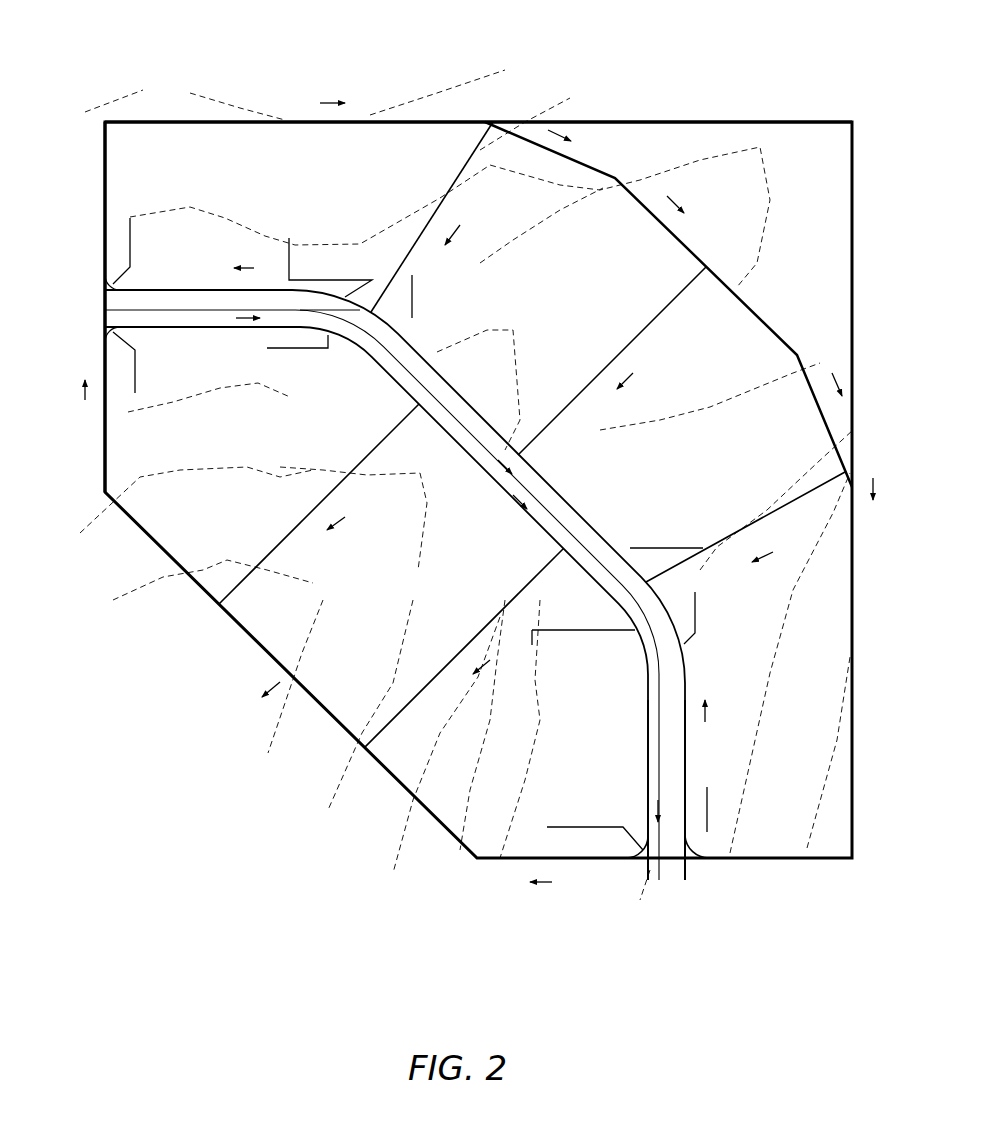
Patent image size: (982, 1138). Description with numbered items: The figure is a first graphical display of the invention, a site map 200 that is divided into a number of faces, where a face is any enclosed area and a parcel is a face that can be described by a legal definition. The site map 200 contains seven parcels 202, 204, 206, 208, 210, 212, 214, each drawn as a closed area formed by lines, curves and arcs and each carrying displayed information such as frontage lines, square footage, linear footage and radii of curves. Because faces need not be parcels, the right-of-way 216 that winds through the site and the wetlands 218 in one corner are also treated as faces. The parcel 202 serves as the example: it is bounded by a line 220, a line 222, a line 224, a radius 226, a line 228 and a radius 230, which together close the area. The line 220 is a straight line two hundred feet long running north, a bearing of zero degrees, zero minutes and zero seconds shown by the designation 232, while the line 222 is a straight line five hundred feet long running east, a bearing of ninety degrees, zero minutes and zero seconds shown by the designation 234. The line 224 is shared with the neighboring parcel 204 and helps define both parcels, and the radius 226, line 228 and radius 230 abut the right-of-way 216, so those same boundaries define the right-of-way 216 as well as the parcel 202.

The site map 200 is at (318, 852).
The parcel 202 is at (122, 150).
The parcel 204 is at (513, 197).
The parcel 206 is at (650, 337).
The parcel 208 is at (835, 800).
The parcel 210 is at (482, 818).
The parcel 212 is at (283, 592).
The parcel 214 is at (260, 525).
The right-of-way 216 is at (667, 847).
The wetlands 218 is at (780, 163).
The line 220 is at (105, 187).
The line 222 is at (245, 122).
The line 224 is at (450, 185).
The radius 226 is at (373, 305).
The line 228 is at (285, 290).
The radius 230 is at (105, 290).
The designation 232 is at (93, 432).
The designation 234 is at (328, 98).